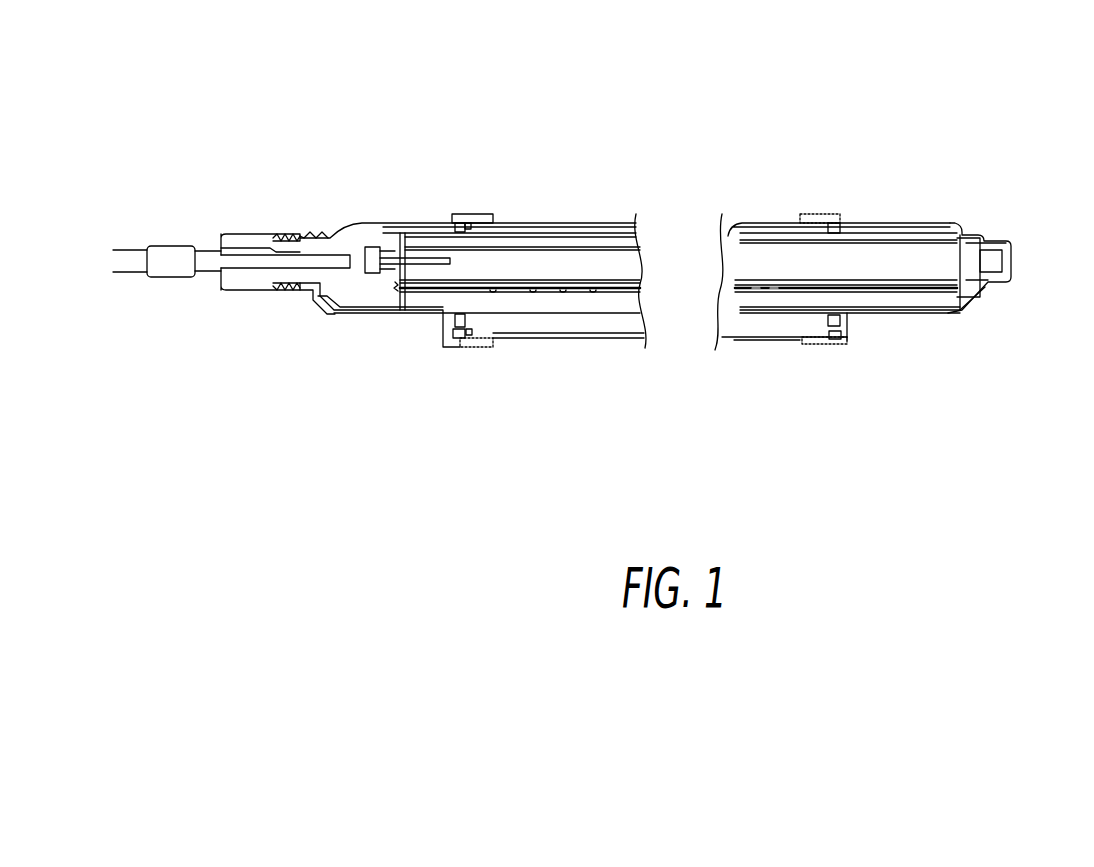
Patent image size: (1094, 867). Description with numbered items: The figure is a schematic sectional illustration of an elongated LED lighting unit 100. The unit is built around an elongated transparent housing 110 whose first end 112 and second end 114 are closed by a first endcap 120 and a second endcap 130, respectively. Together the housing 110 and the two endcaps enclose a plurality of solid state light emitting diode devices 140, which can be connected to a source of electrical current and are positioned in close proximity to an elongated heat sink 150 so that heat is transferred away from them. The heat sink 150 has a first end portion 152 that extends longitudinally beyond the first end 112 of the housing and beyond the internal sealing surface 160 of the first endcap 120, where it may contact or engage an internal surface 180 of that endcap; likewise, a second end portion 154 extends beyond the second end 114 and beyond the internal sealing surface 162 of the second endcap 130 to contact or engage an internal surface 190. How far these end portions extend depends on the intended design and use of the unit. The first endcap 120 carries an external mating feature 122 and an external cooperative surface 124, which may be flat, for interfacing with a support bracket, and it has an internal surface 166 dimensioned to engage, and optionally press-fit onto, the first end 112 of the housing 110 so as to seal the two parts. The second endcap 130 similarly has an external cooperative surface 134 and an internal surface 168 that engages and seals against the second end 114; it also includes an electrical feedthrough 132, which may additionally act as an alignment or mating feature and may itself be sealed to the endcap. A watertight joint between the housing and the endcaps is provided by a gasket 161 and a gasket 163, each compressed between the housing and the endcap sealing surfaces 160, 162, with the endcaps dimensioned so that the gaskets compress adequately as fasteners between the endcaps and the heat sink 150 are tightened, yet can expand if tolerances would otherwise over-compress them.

The elongated LED lighting unit 100 is at (722, 95).
The elongated transparent housing 110 is at (730, 220).
The first end 112 is at (788, 220).
The second end 114 is at (503, 220).
The first endcap 120 is at (975, 207).
The external mating feature 122 is at (1013, 250).
The external cooperative surface 124 is at (933, 333).
The second endcap 130 is at (382, 208).
The electrical feedthrough 132 is at (258, 236).
The external cooperative surface 134 is at (345, 314).
The solid state light emitting diode devices (LEDs) 140 is at (567, 290).
The elongated heat sink 150 is at (510, 298).
The first end portion 152 is at (947, 300).
The second end portion 154 is at (435, 303).
The internal sealing surface 160 is at (853, 220).
The gasket 161 is at (838, 342).
The internal sealing surface 162 is at (450, 218).
The gasket 163 is at (457, 342).
The internal surface 166 is at (817, 316).
The internal surface 168 is at (486, 326).
The internal surface 180 is at (907, 320).
The internal surface 190 is at (410, 325).